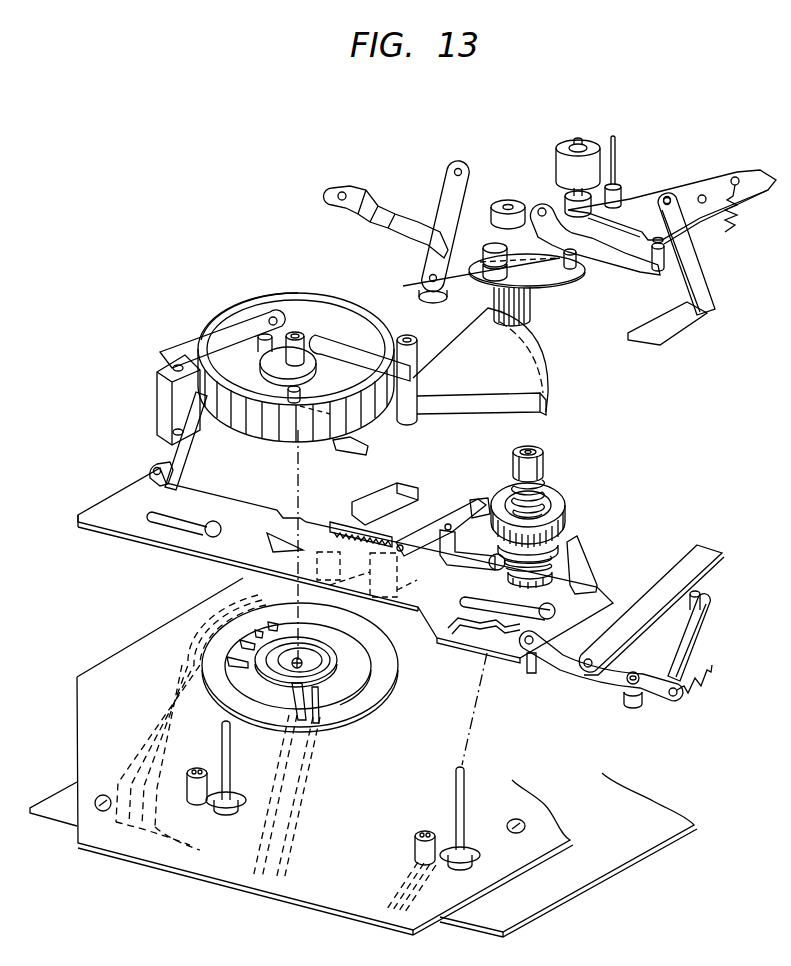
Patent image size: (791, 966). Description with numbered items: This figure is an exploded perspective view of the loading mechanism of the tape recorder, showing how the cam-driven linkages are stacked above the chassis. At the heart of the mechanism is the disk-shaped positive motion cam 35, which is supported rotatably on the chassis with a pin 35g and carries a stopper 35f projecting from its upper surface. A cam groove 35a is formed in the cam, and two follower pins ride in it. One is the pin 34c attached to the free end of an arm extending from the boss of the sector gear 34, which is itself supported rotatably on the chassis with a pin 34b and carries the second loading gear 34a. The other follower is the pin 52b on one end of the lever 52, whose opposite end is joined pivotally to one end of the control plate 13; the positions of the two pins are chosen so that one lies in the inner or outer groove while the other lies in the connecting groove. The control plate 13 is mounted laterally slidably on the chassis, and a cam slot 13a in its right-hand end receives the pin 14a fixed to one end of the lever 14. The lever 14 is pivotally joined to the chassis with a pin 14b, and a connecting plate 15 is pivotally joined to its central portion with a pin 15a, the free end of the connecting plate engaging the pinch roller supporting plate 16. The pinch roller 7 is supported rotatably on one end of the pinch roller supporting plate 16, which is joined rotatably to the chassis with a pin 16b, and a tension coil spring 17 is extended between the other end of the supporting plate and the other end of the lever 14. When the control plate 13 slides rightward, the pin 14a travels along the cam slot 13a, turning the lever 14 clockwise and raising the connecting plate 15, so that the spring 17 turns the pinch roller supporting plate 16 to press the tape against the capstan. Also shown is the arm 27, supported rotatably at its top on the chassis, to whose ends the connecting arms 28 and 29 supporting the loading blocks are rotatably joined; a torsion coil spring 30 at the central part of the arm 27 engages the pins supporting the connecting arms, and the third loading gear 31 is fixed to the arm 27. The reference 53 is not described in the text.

The pinch roller 7 is at (556, 178).
The control plate 13 is at (146, 528).
The cam slot 13a is at (463, 627).
The lever 14 is at (610, 677).
The pin 14a is at (528, 673).
The pin 14b is at (637, 682).
The connecting plate 15 is at (667, 577).
The pin 15a is at (584, 668).
The pinch roller supporting plate 16 is at (688, 186).
The pin 16b is at (703, 202).
The tension coil spring 17 is at (706, 667).
The arm 27 is at (455, 270).
The connecting arm 28 is at (392, 232).
The connecting arm 29 is at (443, 200).
The torsion coil spring 30 is at (550, 282).
The third loading gear 31 is at (537, 305).
The sector gear 34 is at (548, 412).
The second loading gear 34a is at (546, 391).
The pin 34b is at (410, 338).
The pin 34c is at (306, 335).
The positive motion cam 35 is at (380, 405).
The cam groove 35a is at (213, 322).
The stopper 35f is at (302, 412).
The pin 35g is at (294, 358).
The lever 52 is at (158, 375).
The pin 52b is at (262, 332).
The arm end 53 is at (322, 340).